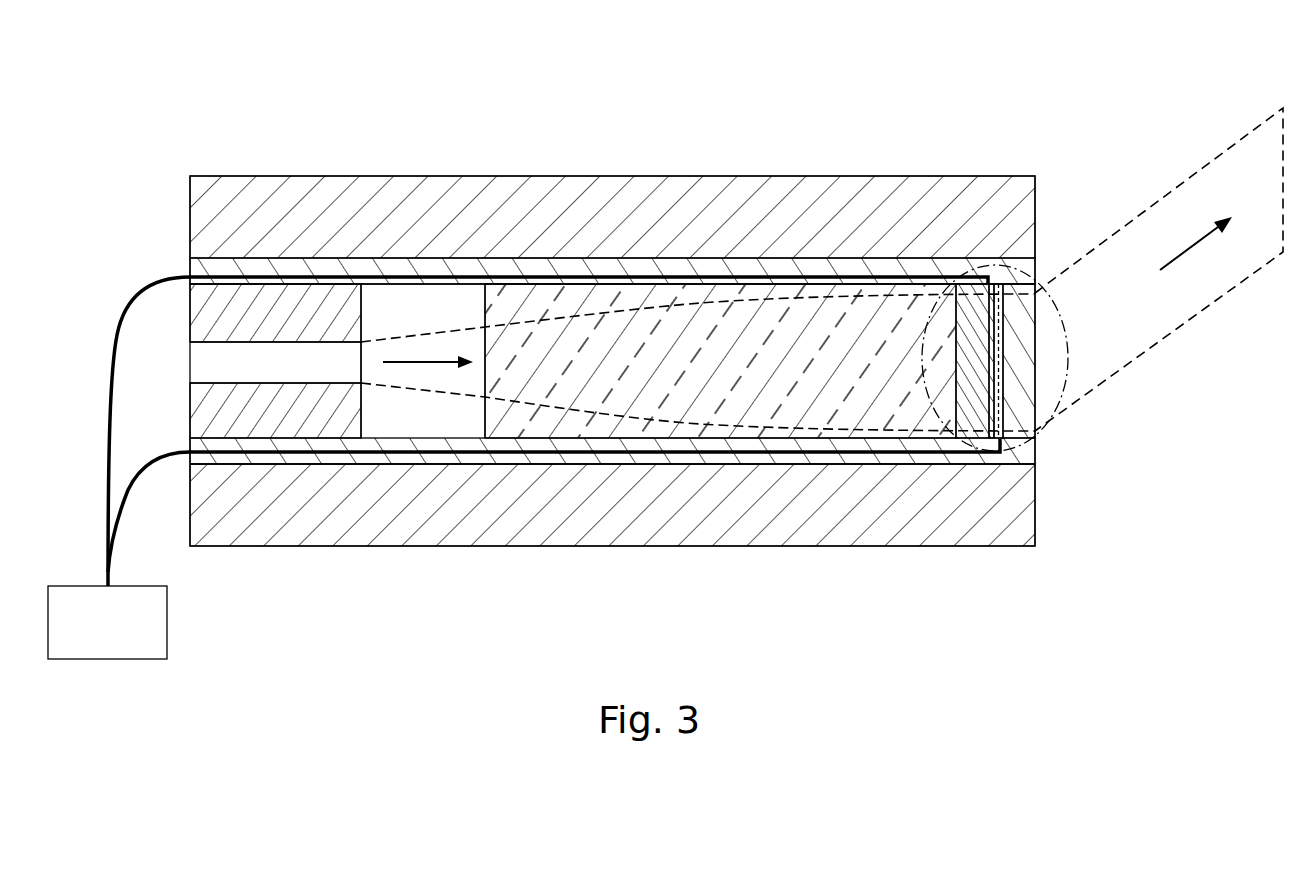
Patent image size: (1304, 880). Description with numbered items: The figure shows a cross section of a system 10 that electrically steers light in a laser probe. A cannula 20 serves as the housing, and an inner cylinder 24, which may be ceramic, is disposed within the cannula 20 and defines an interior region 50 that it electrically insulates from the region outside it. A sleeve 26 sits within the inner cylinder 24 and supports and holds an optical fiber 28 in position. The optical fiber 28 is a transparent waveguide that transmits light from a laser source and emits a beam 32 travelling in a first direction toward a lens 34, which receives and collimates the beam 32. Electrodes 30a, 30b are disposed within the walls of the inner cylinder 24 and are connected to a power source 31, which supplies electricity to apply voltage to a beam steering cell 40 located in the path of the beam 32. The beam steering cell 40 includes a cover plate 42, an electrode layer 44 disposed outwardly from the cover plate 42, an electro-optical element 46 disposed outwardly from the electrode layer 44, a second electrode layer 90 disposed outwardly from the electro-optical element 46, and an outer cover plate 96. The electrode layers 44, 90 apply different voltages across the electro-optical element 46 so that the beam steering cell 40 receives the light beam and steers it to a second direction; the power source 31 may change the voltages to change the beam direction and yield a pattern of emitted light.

The system 10 is at (325, 98).
The cannula 20 is at (583, 176).
The inner cylinder 24 is at (586, 464).
The sleeve 26 is at (188, 407).
The optical fiber 28 is at (188, 362).
The electrode 30a is at (243, 268).
The electrode 30b is at (292, 455).
The power source 31 is at (113, 660).
The beam 32 is at (417, 330).
The lens 34 is at (516, 283).
The beam steering cell 40 is at (1050, 420).
The cover plate 42 is at (962, 440).
The electrode layer 44 is at (994, 284).
The electro-optical element 46 is at (989, 284).
The interior region 50 is at (437, 425).
The electrode layer 90 is at (998, 440).
The cover plate 96 is at (1038, 292).